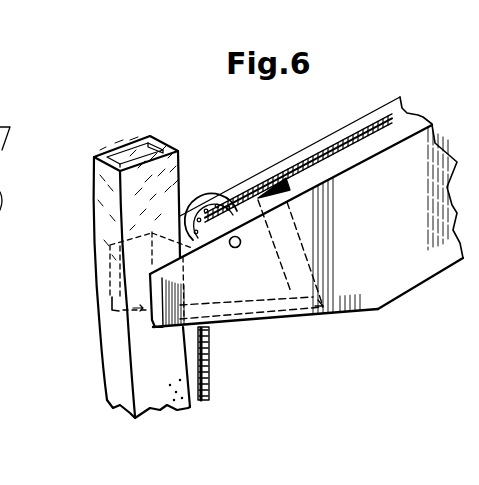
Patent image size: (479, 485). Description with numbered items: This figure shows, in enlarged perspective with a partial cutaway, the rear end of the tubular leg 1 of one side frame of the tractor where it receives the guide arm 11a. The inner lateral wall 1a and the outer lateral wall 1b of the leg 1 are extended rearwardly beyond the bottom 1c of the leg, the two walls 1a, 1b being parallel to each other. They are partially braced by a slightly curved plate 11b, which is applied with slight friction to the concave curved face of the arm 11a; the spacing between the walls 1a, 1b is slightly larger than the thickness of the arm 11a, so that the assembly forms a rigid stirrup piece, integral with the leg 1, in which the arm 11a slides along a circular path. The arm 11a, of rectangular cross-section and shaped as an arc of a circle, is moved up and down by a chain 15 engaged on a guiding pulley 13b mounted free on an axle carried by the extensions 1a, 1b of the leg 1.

The leg 1 is at (437, 148).
The inner lateral wall 1a is at (191, 216).
The outer lateral wall 1b is at (265, 303).
The bottom of leg 1c is at (300, 256).
The guide arm 11a is at (100, 213).
The slightly curved plate 11b is at (196, 276).
The guiding pulley 13b is at (234, 197).
The chain 15 is at (355, 130).